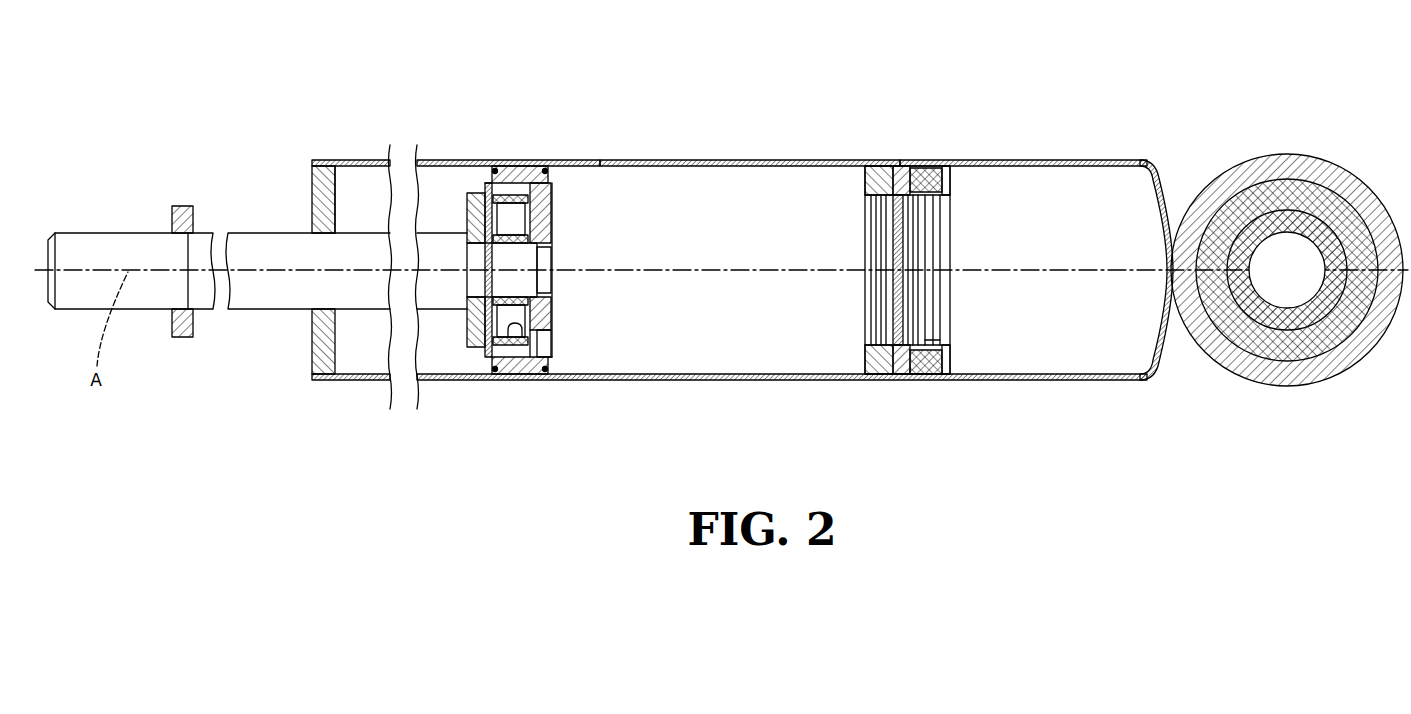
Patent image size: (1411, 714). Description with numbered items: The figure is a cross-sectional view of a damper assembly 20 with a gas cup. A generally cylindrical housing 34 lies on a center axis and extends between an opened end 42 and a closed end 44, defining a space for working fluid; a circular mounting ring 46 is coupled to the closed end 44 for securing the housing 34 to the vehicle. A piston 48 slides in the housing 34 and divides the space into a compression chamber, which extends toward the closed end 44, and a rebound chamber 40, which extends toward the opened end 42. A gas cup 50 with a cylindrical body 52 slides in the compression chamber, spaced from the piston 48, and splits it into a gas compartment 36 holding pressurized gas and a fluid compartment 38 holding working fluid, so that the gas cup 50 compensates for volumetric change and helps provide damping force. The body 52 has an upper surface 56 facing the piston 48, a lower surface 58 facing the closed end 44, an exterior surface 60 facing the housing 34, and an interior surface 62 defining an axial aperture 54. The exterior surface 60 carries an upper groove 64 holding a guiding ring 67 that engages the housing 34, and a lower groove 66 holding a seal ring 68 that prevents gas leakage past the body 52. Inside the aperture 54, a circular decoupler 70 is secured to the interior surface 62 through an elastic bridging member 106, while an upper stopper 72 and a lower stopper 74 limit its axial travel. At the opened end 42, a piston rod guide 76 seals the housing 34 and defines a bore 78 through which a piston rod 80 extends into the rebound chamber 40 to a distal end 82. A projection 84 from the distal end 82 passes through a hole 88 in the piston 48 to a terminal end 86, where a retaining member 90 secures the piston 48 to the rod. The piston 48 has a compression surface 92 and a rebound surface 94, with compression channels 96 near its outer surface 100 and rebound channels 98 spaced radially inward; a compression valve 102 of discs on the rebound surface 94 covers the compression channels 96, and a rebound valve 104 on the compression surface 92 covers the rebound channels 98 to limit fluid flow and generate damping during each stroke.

The damper assembly 20 is at (228, 120).
The housing 34 is at (605, 160).
The gas compartment 36 is at (1085, 163).
The fluid compartment 38 is at (722, 162).
The rebound chamber 40 is at (400, 165).
The opened end 42 is at (318, 165).
The closed end 44 is at (1160, 175).
The mounting ring 46 is at (1290, 175).
The piston 48 is at (522, 165).
The gas cup 50 is at (913, 156).
The body 52 is at (900, 380).
The aperture 54 is at (945, 205).
The upper surface 56 is at (865, 352).
The lower surface 58 is at (950, 355).
The exterior surface 60 is at (870, 380).
The interior surface 62 is at (930, 338).
The upper groove 64 is at (872, 168).
The lower groove 66 is at (930, 168).
The guiding ring 67 is at (890, 380).
The seal ring 68 is at (928, 380).
The decoupler 70 is at (900, 290).
The upper stopper 72 is at (870, 205).
The lower stopper 74 is at (935, 208).
The piston rod guide 76 is at (325, 378).
The bore 78 is at (345, 168).
The piston rod 80 is at (83, 245).
The distal end 82 is at (467, 256).
The projection 84 is at (530, 280).
The terminal end 86 is at (538, 260).
The hole 88 is at (548, 213).
The retaining member 90 is at (553, 228).
The compression surface 92 is at (548, 337).
The rebound surface 94 is at (486, 333).
The compression channels 96 is at (500, 168).
The rebound channels 98 is at (508, 380).
The outer surface 100 is at (520, 380).
The compression valve 102 is at (457, 167).
The rebound valve 104 is at (525, 318).
The bridging member 106 is at (893, 167).